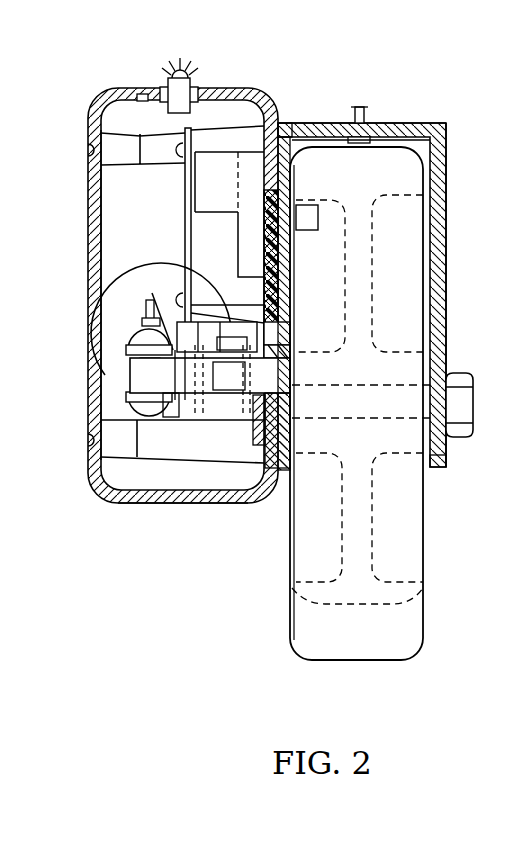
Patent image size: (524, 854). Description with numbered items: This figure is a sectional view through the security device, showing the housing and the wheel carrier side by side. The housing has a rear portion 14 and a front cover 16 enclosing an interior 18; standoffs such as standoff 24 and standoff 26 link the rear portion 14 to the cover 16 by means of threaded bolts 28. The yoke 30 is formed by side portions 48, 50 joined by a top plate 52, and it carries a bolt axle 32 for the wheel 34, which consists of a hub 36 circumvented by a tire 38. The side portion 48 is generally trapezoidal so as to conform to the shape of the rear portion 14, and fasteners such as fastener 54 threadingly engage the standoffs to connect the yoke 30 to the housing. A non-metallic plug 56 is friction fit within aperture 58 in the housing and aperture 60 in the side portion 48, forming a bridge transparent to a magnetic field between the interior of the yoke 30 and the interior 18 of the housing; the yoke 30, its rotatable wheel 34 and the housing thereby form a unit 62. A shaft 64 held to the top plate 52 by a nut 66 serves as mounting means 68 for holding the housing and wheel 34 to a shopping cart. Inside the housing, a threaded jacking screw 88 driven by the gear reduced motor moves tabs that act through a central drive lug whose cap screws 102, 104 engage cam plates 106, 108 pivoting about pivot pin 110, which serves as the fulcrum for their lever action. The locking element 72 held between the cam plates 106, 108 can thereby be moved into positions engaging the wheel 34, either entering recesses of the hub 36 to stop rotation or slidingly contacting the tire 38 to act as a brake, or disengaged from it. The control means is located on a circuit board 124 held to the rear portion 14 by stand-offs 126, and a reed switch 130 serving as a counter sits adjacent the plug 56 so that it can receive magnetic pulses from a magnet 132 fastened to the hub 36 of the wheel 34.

The rear portion 14 is at (210, 498).
The front cover 16 is at (92, 395).
The interior 18 is at (118, 258).
The standoff 24 is at (148, 448).
The standoff 26 is at (153, 150).
The threaded bolts 28 is at (81, 470).
The yoke 30 is at (458, 196).
The bolt axle 32 is at (457, 377).
The wheel 34 is at (396, 533).
The hub 36 is at (447, 459).
The tire 38 is at (407, 642).
The side portion 48 is at (280, 468).
The side portion 50 is at (433, 278).
The top plate 52 is at (412, 123).
The fastener 54 is at (297, 123).
The plug 56 is at (280, 283).
The aperture 58 is at (197, 203).
The aperture 60 is at (288, 345).
The unit 62 is at (187, 538).
The shaft 64 is at (361, 107).
The nut 66 is at (363, 140).
The mounting means 68 is at (422, 78).
The element 72 is at (278, 383).
The threaded jacking screw 88 is at (128, 370).
The cap screw 102 is at (140, 335).
The cap screw 104 is at (135, 420).
The cam plate 106 is at (172, 395).
The cam plate 108 is at (150, 297).
The pivot pin 110 is at (273, 330).
The circuit board 124 is at (193, 137).
The stand-offs 126 is at (228, 140).
The reed switch 130 is at (242, 245).
The magnet 132 is at (312, 210).